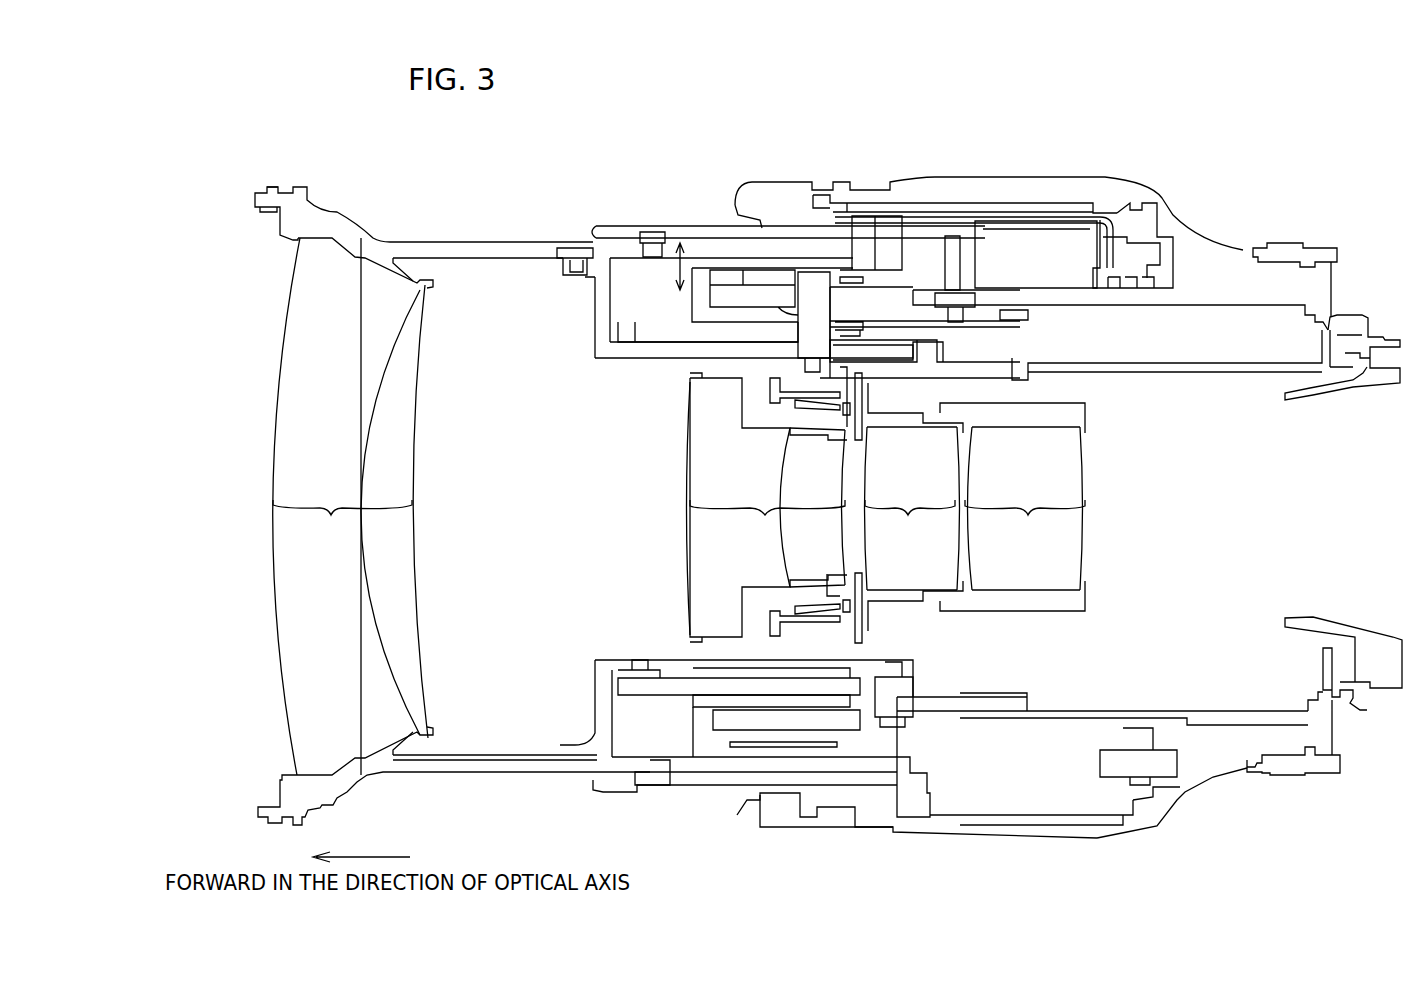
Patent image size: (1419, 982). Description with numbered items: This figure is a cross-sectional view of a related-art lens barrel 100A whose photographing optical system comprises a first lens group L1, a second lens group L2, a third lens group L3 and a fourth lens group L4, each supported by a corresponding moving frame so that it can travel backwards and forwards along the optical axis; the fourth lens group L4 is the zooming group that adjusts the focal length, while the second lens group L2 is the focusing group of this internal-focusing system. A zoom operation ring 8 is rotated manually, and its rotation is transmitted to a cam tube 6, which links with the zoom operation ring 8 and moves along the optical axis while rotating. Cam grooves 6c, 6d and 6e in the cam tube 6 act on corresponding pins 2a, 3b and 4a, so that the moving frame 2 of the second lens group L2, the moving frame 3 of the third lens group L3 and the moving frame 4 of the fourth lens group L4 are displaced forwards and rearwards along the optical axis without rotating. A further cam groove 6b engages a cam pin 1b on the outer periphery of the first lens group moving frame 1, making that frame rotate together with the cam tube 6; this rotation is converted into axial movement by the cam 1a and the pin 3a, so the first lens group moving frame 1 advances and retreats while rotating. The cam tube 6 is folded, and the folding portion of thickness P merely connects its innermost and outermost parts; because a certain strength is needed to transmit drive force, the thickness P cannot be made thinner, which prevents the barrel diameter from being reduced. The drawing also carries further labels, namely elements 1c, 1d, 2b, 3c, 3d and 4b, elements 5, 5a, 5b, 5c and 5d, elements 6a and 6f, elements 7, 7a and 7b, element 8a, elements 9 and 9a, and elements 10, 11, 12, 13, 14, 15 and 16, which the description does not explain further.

The lens barrel 100A is at (1258, 146).
The first lens group moving frame 1 is at (306, 198).
The cam 1a is at (557, 251).
The cam pin 1b is at (646, 786).
The engaging portion 1c is at (268, 213).
The engaging portion 1d is at (272, 187).
The second lens group moving frame 2 is at (718, 365).
The pin 2a is at (787, 290).
The holding portion 2b is at (845, 585).
The third lens group moving frame 3 is at (603, 266).
The pin 3a is at (573, 250).
The pin 3b is at (900, 722).
The portion of fixed frame 3c is at (660, 680).
The portion of fixed frame 3d is at (845, 700).
The fourth lens group moving frame 4 is at (917, 330).
The pin 4a is at (853, 315).
The guide portion 4b is at (635, 676).
The rear barrel 5 is at (1045, 305).
The portion of rear barrel 5a is at (1065, 716).
The portion of rear barrel 5b is at (1063, 308).
The portion of rear barrel 5c is at (1036, 254).
The screw 5d is at (983, 296).
The cam tube 6 is at (990, 703).
The portion of moving frame 6a is at (912, 808).
The cam groove 6b is at (690, 778).
The cam groove 6c is at (787, 270).
The cam groove 6d is at (866, 702).
The cam groove 6e is at (870, 313).
The portion of moving frame 6f is at (952, 235).
The intermediate frame 7 is at (690, 268).
The screw 7a is at (865, 222).
The portion of intermediate frame 7b is at (745, 275).
The zoom operation ring 8 is at (1100, 838).
The portion of outer cover 8a is at (980, 828).
The cover ring 9 is at (797, 190).
The portion of cover ring 9a is at (1010, 210).
The operation ring 10 is at (1145, 250).
The plate 11 is at (812, 636).
The plate 12 is at (772, 632).
The diaphragm unit 13 is at (872, 435).
The mount piece 14 is at (1283, 245).
The mount 15 is at (1362, 708).
The mount piece 16 is at (1335, 327).
The thickness of folding portion P is at (672, 266).
The first lens group L1 is at (350, 506).
The second lens group L2 is at (766, 508).
The third lens group L3 is at (914, 507).
The fourth lens group L4 is at (1012, 507).